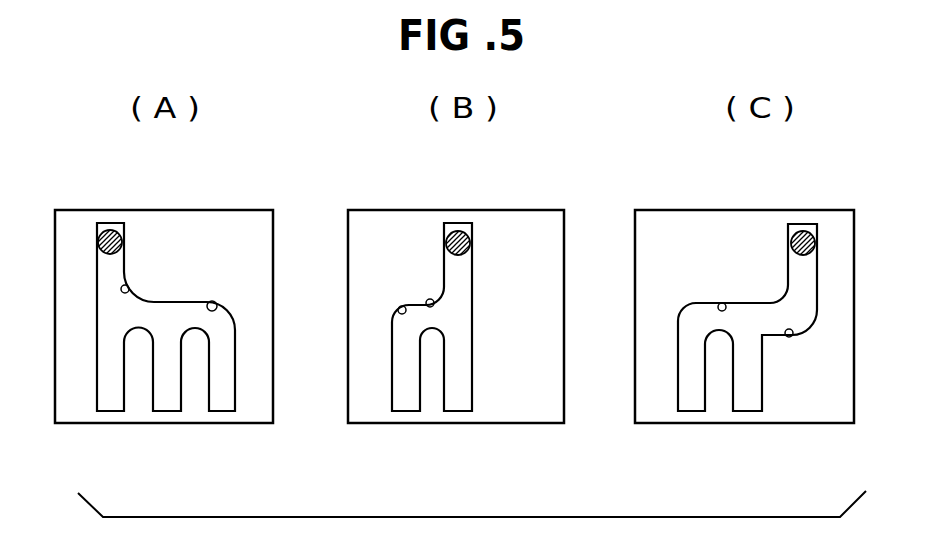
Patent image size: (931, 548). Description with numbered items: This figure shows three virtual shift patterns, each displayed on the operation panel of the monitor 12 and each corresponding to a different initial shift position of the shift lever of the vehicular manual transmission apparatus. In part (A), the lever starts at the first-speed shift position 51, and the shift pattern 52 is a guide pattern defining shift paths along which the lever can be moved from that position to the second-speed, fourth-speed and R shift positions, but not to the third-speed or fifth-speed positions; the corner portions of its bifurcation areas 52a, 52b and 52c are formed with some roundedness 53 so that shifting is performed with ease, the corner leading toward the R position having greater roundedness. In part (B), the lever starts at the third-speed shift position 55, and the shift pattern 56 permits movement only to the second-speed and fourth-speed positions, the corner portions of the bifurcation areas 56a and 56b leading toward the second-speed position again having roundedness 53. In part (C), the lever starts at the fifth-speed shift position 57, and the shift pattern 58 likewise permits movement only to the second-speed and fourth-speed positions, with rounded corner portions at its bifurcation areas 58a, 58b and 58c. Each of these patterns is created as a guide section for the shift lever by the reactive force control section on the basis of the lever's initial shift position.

The monitor 12 is at (230, 210).
The first-speed shift position 51 is at (112, 231).
The shift pattern 52 is at (82, 294).
The bifurcation area 52a is at (110, 321).
The bifurcation area 52b is at (172, 317).
The bifurcation area 52c is at (226, 325).
The roundedness 53 is at (147, 305).
The third-speed shift position 55 is at (458, 224).
The shift pattern 56 is at (491, 284).
The bifurcation area 56a is at (440, 315).
The bifurcation area 56b is at (403, 333).
The fifth-speed shift position 57 is at (803, 226).
The shift pattern 58 is at (835, 271).
The bifurcation area 58a is at (797, 308).
The bifurcation area 58b is at (748, 330).
The bifurcation area 58c is at (697, 330).